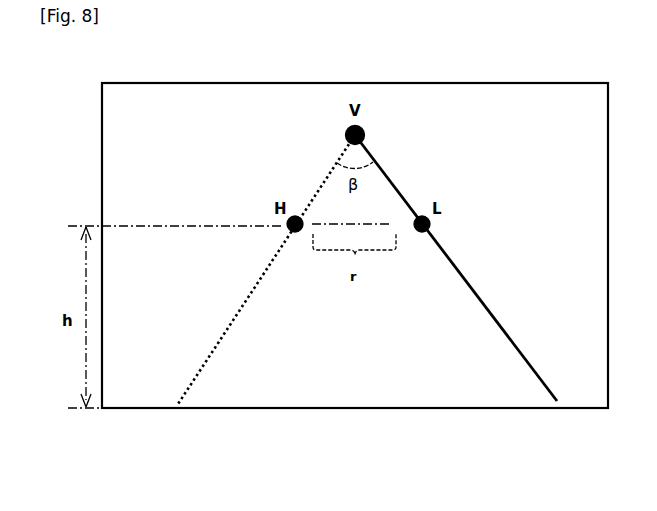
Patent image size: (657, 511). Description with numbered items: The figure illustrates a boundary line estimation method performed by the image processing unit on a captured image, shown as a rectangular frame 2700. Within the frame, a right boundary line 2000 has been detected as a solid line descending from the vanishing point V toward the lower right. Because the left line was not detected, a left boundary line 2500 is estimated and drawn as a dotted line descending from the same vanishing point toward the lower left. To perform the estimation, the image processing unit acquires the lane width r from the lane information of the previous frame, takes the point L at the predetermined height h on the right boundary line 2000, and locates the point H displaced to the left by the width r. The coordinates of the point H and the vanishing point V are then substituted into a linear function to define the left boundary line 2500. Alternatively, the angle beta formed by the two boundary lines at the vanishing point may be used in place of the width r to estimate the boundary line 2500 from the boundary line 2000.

The image capture region 2700 is at (237, 390).
The left boundary line 2500 is at (237, 306).
The right boundary line 2000 is at (490, 309).